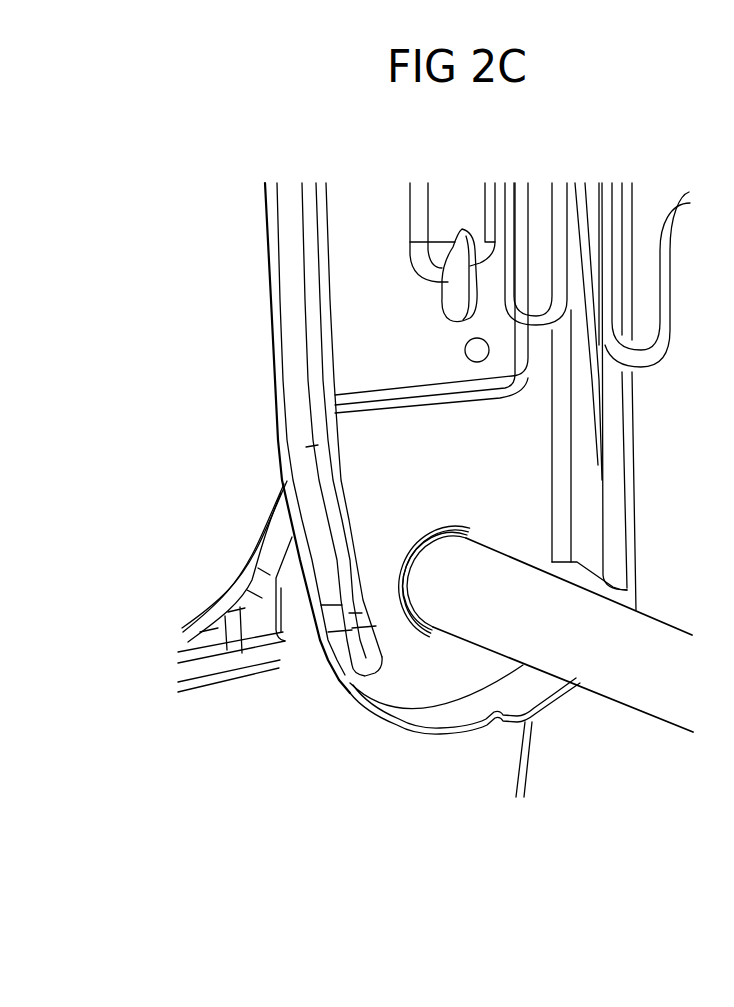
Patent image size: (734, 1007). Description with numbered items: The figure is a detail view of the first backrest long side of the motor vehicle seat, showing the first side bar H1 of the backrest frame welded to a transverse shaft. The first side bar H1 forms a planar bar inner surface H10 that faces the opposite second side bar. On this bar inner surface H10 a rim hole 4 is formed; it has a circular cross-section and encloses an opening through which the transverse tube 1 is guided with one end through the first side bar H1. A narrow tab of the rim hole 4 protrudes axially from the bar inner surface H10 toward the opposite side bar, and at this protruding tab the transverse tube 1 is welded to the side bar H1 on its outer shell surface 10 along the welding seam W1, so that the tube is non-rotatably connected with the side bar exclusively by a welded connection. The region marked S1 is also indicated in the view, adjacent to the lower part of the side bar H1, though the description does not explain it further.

The first side bar H1 is at (355, 194).
The bar inner surface H10 is at (531, 453).
The side sill member S1 is at (231, 734).
The welding seam W1 is at (417, 546).
The rim hole 4 is at (437, 527).
The outer shell surface 10 is at (477, 618).
The transverse tube 1 is at (613, 688).